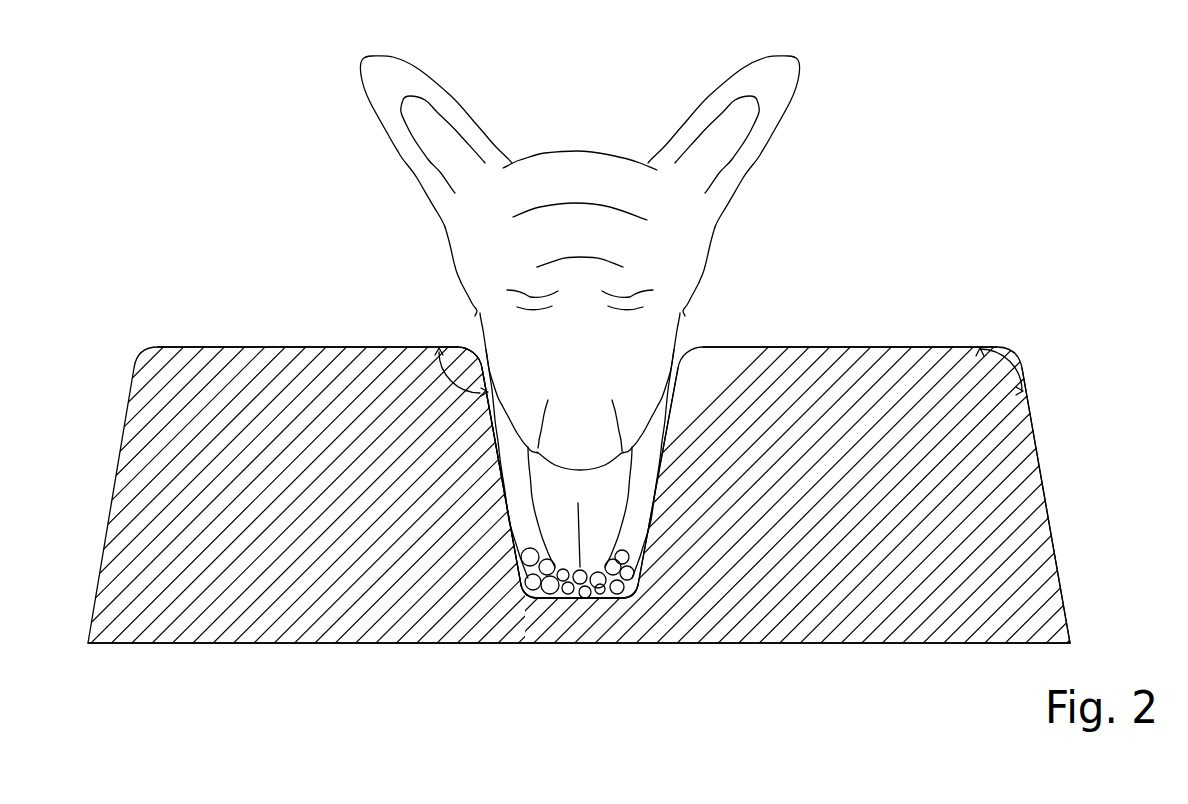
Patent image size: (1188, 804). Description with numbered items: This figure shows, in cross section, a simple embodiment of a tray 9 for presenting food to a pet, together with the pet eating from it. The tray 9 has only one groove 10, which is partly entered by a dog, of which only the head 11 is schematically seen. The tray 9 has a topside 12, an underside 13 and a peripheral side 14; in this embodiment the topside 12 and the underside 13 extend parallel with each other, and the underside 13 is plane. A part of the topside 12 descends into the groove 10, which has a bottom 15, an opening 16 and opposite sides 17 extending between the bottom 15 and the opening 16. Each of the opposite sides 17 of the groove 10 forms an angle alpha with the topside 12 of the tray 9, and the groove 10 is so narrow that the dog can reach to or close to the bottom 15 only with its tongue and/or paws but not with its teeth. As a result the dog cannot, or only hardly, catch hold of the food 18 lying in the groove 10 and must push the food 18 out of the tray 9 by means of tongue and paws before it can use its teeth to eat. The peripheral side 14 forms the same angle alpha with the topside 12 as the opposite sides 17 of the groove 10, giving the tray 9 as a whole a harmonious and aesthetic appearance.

The tray 9 is at (972, 296).
The groove 10 is at (643, 477).
The head 11 is at (585, 111).
The topside 12 is at (833, 347).
The underside 13 is at (868, 643).
The peripheral side 14 is at (1047, 457).
The bottom 15 is at (582, 597).
The opening 16 is at (472, 348).
The opposite sides 17 is at (500, 479).
The food 18 is at (623, 598).
The angle alpha is at (728, 377).